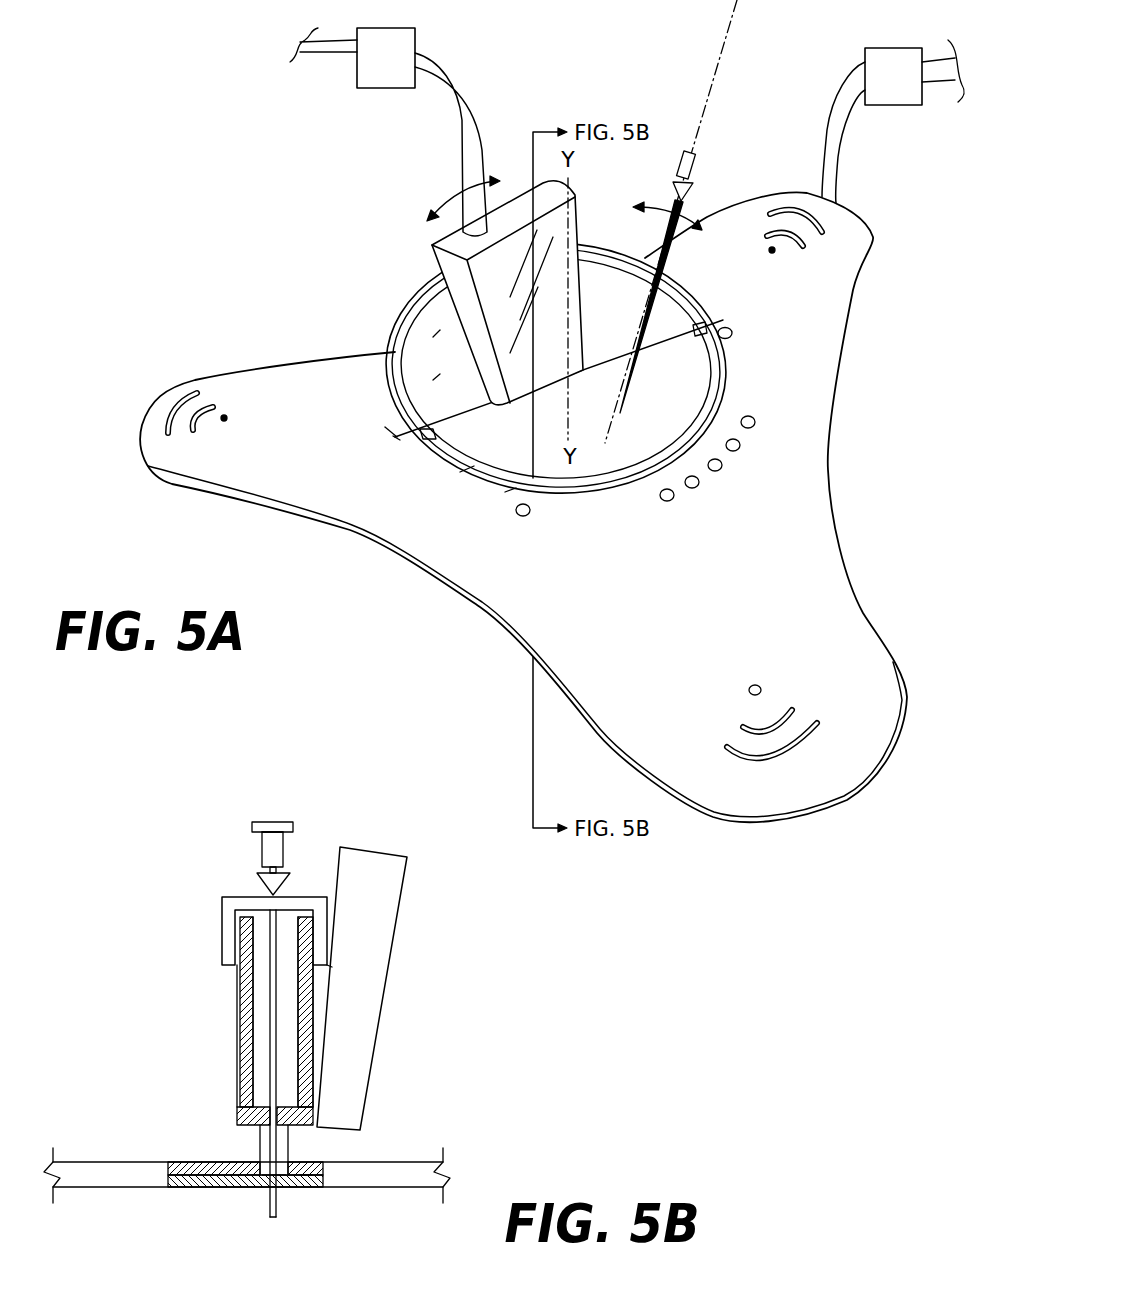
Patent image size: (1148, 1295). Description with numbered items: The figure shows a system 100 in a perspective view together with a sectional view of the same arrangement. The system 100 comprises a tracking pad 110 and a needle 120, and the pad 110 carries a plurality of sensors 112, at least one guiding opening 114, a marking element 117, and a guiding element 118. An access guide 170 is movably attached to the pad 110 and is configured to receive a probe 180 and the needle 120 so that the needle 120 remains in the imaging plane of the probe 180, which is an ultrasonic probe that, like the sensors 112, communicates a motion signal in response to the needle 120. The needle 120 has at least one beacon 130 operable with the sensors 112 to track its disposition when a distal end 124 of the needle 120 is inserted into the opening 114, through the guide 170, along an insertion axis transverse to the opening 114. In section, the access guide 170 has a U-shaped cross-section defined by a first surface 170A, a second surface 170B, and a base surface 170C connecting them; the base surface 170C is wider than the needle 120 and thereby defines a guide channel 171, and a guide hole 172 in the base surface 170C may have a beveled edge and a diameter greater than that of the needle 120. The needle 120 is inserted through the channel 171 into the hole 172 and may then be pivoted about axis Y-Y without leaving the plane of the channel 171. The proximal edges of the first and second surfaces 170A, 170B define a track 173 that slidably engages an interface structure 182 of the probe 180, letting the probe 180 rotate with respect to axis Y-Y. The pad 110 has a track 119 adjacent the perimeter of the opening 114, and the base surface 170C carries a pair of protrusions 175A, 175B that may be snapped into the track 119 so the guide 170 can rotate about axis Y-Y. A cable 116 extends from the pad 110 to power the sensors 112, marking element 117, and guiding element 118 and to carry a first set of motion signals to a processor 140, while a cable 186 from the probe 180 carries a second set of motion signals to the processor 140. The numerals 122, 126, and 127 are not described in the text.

In FIG. 5A, the system 100 is at (313, 155).
In FIG. 5A, the tracking pad 110 is at (858, 418).
In FIG. 5B, the tracking pad 110 is at (112, 1173).
In FIG. 5A, the sensors 112 is at (155, 410).
In FIG. 5A, the guiding opening 114 is at (510, 492).
In FIG. 5B, the guiding opening 114 is at (195, 1182).
In FIG. 5A, the cable 116 is at (850, 88).
In FIG. 5A, the marking element 117 is at (525, 518).
In FIG. 5A, the guiding element 118 is at (683, 512).
In FIG. 5A, the track 119 is at (467, 470).
In FIG. 5B, the track 119 is at (307, 1173).
In FIG. 5B, the needle 120 is at (288, 790).
In FIG. 5A, the needle 122 is at (700, 117).
In FIG. 5B, the needle 122 is at (270, 1047).
In FIG. 5B, the distal end 124 is at (278, 1220).
In FIG. 5A, the needle hub 126 is at (703, 140).
In FIG. 5B, the needle hub 126 is at (262, 820).
In FIG. 5B, the hub flange 127 is at (258, 845).
In FIG. 5A, the beacon 130 is at (697, 192).
In FIG. 5B, the beacon 130 is at (258, 878).
In FIG. 5A, the processor 140 is at (627, 66).
In FIG. 5A, the access guide 170 is at (610, 263).
In FIG. 5B, the access guide 170 is at (209, 952).
In FIG. 5A, the first surface 170A is at (433, 335).
In FIG. 5B, the first surface 170A is at (242, 998).
In FIG. 5A, the second surface 170B is at (433, 380).
In FIG. 5B, the second surface 170B is at (307, 1047).
In FIG. 5A, the base surface 170C is at (393, 437).
In FIG. 5B, the base surface 170C is at (243, 1115).
In FIG. 5B, the guide channel 171 is at (283, 963).
In FIG. 5B, the guide hole 172 is at (283, 1117).
In FIG. 5A, the track 173 is at (445, 296).
In FIG. 5B, the track 173 is at (307, 970).
In FIG. 5A, the protrusion 175A is at (428, 440).
In FIG. 5A, the protrusion 175B is at (702, 322).
In FIG. 5B, the protrusion 175B is at (267, 1173).
In FIG. 5A, the probe 180 is at (500, 187).
In FIG. 5B, the probe 180 is at (370, 847).
In FIG. 5B, the interface structure 182 is at (222, 910).
In FIG. 5A, the cable 186 is at (450, 77).